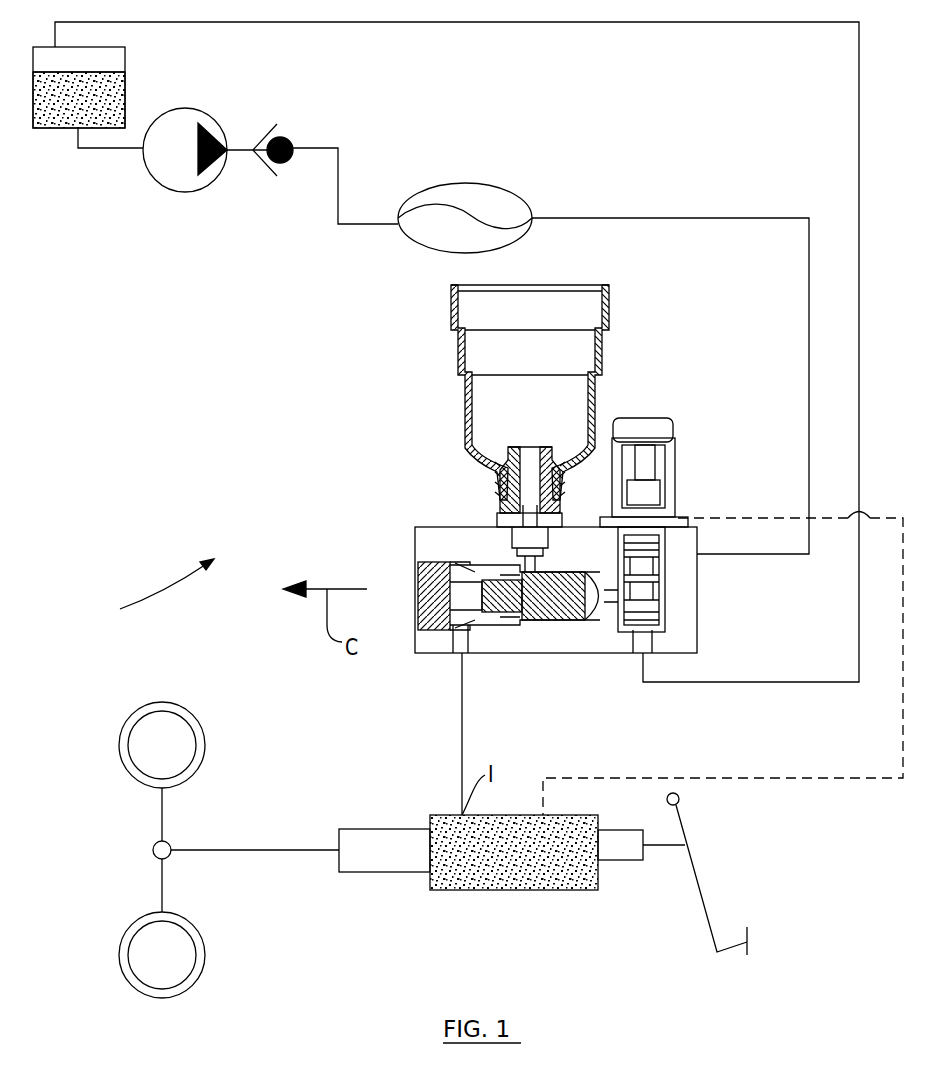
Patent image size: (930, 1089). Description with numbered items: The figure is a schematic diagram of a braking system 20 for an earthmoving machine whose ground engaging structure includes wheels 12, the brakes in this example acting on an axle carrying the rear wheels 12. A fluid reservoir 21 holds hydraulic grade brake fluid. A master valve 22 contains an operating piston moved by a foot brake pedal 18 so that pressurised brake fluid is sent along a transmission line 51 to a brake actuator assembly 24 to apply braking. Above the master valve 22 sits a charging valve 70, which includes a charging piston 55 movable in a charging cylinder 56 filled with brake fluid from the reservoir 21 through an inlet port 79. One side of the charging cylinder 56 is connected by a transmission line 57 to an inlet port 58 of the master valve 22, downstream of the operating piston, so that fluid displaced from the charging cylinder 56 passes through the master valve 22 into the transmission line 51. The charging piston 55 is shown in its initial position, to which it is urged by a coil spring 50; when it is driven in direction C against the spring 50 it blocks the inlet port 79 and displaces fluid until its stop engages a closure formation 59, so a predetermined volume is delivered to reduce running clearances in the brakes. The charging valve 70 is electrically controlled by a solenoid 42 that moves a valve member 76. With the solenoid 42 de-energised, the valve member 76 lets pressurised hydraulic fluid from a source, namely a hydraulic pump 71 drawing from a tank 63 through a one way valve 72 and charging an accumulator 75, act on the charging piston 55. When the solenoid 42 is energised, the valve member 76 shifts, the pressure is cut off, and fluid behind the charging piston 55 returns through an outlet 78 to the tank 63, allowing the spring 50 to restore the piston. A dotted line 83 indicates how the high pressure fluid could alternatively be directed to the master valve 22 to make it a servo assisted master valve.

The wheels 12 is at (200, 725).
The foot brake pedal 18 is at (700, 895).
The braking system 20 is at (154, 592).
The fluid reservoir 21 is at (463, 406).
The master valve 22 is at (468, 908).
The brake actuator assembly 24 is at (170, 856).
The solenoid 42 is at (676, 468).
The coil spring 50 is at (455, 640).
The transmission line 51 is at (250, 850).
The charging piston 55 is at (562, 640).
The charging cylinder 56 is at (495, 640).
The transmission line 57 is at (460, 750).
The inlet port 58 is at (475, 572).
The closure formation 59 is at (418, 590).
The tank 63 is at (57, 130).
The charging valve 70 is at (698, 630).
The hydraulic pump 71 is at (183, 192).
The one way valve 72 is at (292, 140).
The accumulator 75 is at (488, 192).
The valve member 76 is at (655, 595).
The outlet 78 is at (640, 655).
The inlet port 79 is at (505, 572).
The dotted line 83 is at (826, 782).